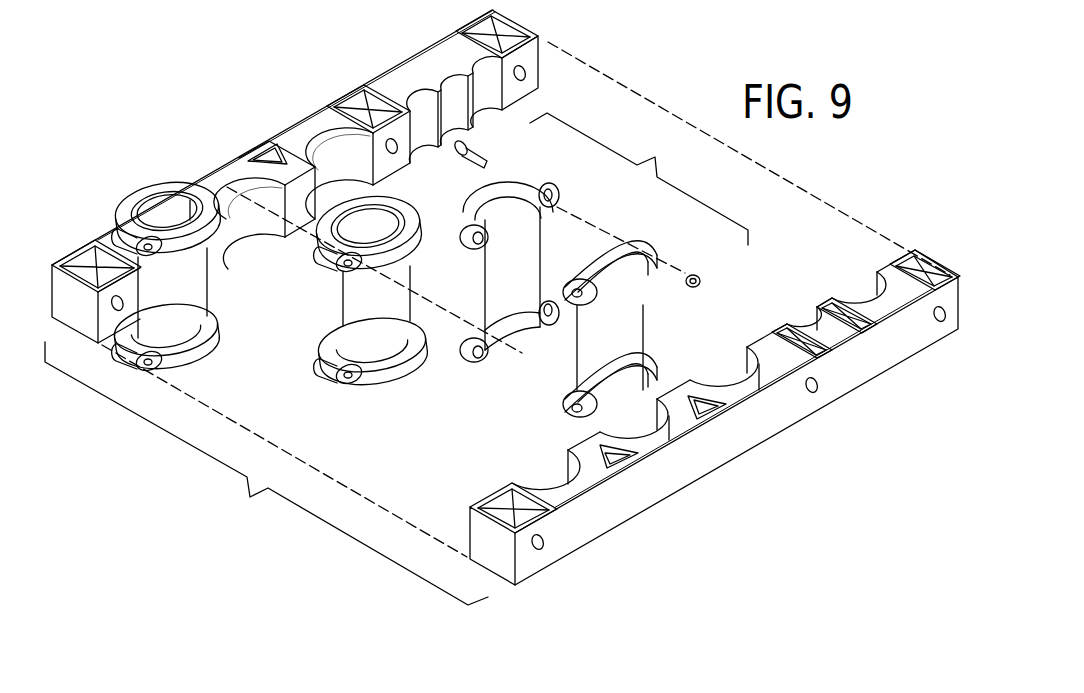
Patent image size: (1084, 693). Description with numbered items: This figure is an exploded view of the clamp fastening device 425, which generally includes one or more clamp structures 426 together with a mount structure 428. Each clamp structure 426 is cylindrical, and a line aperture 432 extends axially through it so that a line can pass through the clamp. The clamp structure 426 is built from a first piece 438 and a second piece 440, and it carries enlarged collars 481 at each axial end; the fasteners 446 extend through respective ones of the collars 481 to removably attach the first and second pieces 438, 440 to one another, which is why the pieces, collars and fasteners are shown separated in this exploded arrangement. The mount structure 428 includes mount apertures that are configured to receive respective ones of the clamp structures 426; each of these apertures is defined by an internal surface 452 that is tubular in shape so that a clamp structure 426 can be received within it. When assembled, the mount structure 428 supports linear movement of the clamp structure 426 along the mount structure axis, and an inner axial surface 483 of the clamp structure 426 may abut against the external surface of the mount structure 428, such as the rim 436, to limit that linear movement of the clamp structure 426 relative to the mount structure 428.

The clamp fastening device 425 is at (192, 68).
The clamp structure 426 is at (639, 179).
The mount structure 428 is at (266, 473).
The line aperture 432 is at (362, 231).
The rim 436 is at (247, 158).
The first piece 438 is at (522, 241).
The second piece 440 is at (632, 345).
The fastener 446 is at (480, 148).
The internal surface 452 is at (328, 150).
The collar 481 is at (152, 186).
The inner axial surface 483 is at (360, 298).